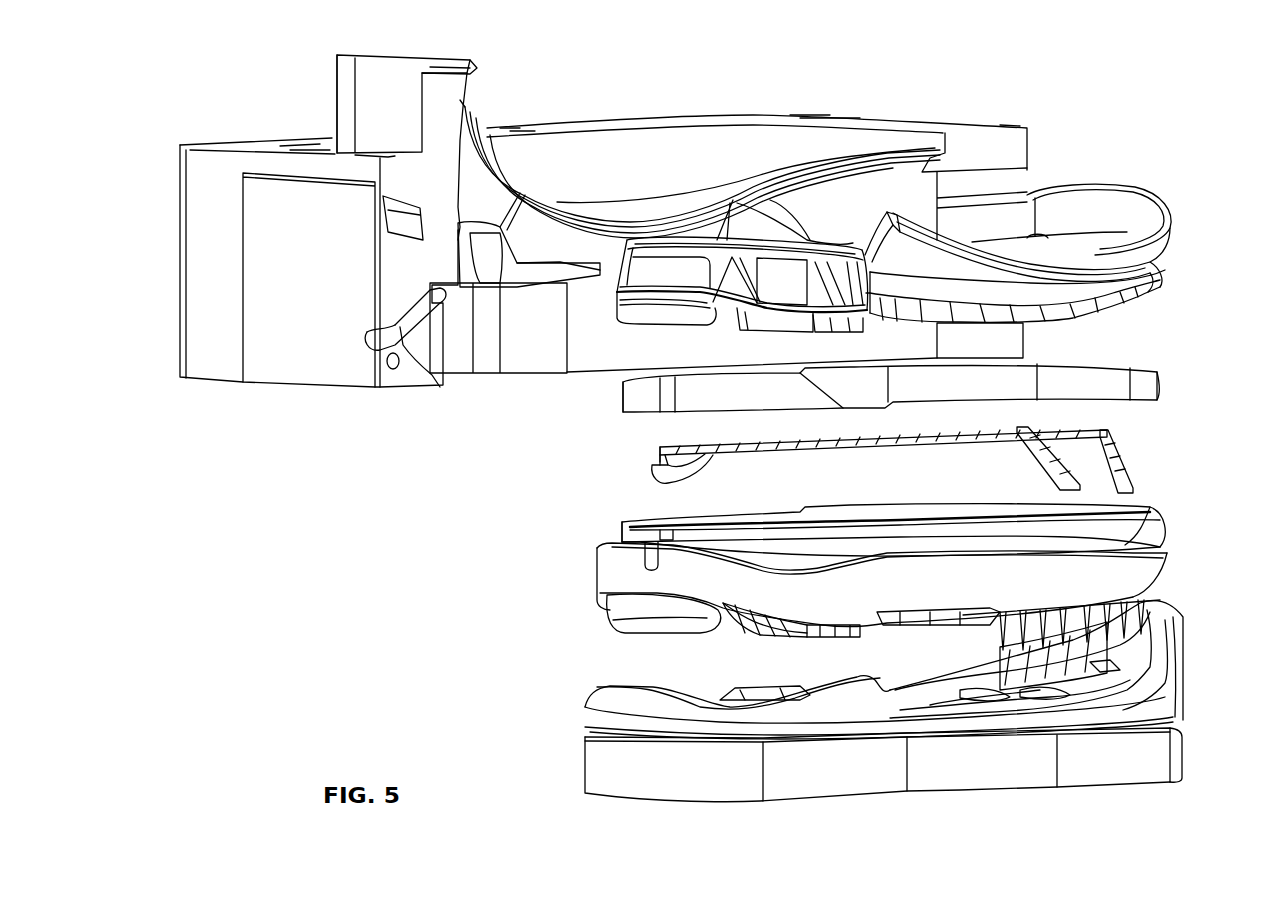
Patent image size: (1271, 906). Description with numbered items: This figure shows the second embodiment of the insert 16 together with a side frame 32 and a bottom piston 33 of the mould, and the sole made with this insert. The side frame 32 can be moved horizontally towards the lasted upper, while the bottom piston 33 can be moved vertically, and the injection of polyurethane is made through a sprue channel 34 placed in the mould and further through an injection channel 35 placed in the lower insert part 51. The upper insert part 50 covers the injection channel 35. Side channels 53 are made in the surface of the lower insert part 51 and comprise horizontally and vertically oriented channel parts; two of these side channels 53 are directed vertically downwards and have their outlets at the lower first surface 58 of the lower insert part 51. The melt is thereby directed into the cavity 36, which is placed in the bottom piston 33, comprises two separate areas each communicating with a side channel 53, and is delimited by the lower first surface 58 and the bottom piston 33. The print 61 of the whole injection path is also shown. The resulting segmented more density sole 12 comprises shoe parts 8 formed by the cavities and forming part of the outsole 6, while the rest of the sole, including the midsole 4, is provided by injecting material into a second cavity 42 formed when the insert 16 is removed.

The midsole 4 is at (1165, 238).
The outsole 6 is at (637, 325).
The shoe parts 8 is at (1160, 282).
The segmented more density sole 12 is at (1160, 217).
The insert 16 is at (608, 572).
The side frame 32 is at (1015, 148).
The bottom piston 33 is at (1158, 748).
The sprue channel 34 is at (420, 348).
The injection channel 35 is at (712, 520).
The cavity 36 is at (1163, 617).
The second cavity 42 is at (1087, 657).
The upper insert part 50 is at (1150, 382).
The lower insert part 51 is at (1140, 522).
The side channel 53 is at (1015, 508).
The lower first surface 58 is at (753, 633).
The print of the injection path 61 is at (740, 444).